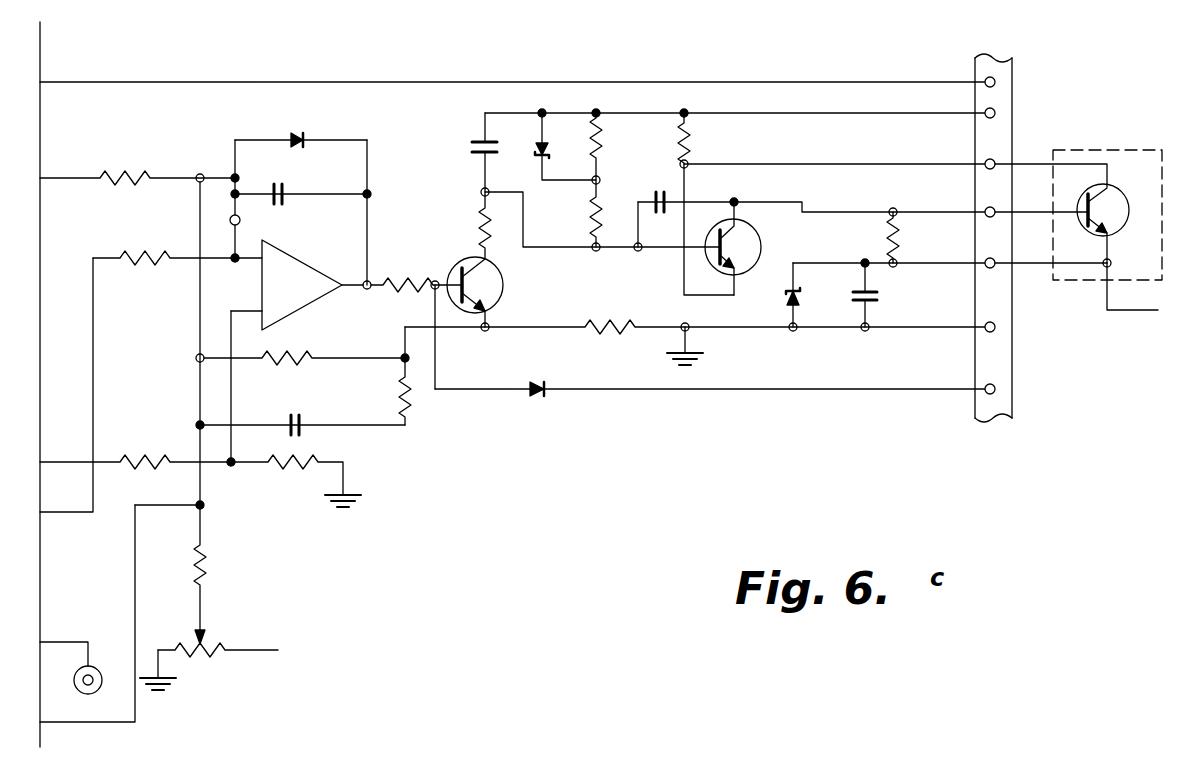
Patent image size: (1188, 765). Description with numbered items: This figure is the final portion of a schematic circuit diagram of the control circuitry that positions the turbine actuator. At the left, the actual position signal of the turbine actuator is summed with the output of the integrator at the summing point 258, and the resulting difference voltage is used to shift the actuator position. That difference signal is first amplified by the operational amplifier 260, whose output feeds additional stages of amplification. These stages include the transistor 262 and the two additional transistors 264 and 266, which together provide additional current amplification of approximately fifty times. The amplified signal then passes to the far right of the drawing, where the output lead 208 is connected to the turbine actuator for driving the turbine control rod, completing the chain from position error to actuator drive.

The summing point 258 is at (229, 220).
The operational amplifier 260 is at (298, 296).
The transistor 262 is at (503, 300).
The transistor 264 is at (760, 258).
The transistor 266 is at (1125, 187).
The lead 208 is at (1135, 310).